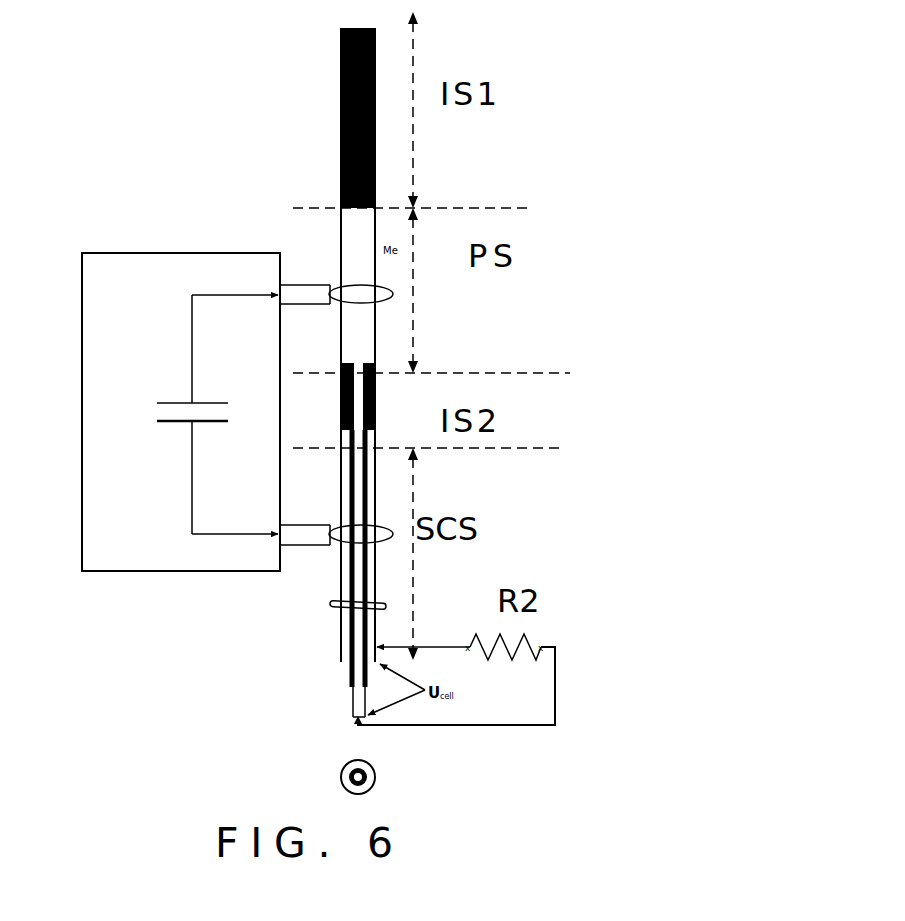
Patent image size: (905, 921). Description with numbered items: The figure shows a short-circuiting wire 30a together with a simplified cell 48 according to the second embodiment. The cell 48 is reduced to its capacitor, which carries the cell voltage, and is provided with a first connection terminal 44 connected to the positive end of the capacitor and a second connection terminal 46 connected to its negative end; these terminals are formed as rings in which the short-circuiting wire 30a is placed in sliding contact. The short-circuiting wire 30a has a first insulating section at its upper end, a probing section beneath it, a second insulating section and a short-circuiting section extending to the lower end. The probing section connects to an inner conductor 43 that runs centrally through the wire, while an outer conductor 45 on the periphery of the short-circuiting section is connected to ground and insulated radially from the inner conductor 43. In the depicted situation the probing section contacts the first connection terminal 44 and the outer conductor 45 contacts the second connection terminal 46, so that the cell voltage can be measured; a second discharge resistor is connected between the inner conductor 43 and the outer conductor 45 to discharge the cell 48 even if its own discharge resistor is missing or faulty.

The short-circuiting wire 30a is at (341, 133).
The first connection terminal 44 is at (353, 300).
The outer conductor 45 is at (338, 628).
The second connection terminal 46 is at (357, 535).
The inner conductor 43 is at (355, 697).
The cell 48 is at (163, 259).